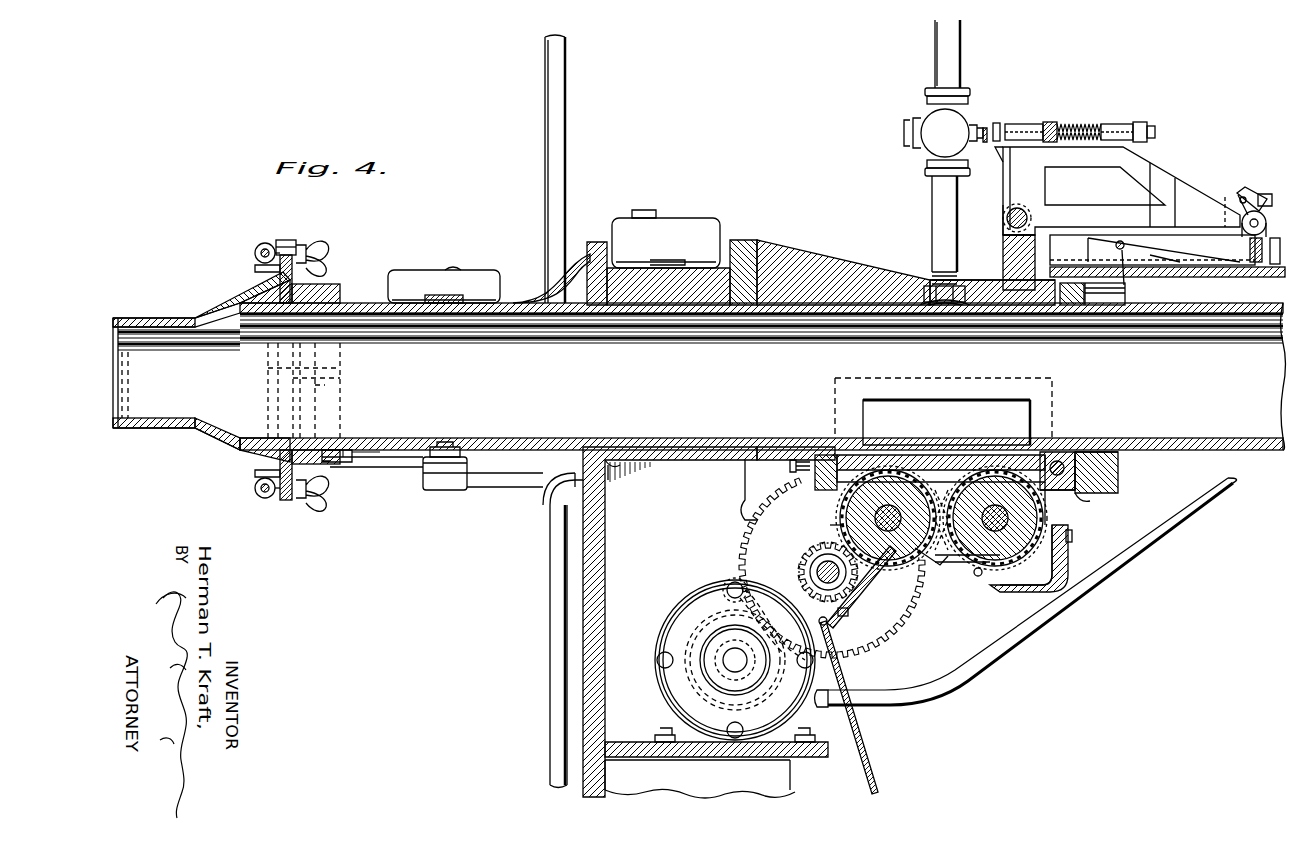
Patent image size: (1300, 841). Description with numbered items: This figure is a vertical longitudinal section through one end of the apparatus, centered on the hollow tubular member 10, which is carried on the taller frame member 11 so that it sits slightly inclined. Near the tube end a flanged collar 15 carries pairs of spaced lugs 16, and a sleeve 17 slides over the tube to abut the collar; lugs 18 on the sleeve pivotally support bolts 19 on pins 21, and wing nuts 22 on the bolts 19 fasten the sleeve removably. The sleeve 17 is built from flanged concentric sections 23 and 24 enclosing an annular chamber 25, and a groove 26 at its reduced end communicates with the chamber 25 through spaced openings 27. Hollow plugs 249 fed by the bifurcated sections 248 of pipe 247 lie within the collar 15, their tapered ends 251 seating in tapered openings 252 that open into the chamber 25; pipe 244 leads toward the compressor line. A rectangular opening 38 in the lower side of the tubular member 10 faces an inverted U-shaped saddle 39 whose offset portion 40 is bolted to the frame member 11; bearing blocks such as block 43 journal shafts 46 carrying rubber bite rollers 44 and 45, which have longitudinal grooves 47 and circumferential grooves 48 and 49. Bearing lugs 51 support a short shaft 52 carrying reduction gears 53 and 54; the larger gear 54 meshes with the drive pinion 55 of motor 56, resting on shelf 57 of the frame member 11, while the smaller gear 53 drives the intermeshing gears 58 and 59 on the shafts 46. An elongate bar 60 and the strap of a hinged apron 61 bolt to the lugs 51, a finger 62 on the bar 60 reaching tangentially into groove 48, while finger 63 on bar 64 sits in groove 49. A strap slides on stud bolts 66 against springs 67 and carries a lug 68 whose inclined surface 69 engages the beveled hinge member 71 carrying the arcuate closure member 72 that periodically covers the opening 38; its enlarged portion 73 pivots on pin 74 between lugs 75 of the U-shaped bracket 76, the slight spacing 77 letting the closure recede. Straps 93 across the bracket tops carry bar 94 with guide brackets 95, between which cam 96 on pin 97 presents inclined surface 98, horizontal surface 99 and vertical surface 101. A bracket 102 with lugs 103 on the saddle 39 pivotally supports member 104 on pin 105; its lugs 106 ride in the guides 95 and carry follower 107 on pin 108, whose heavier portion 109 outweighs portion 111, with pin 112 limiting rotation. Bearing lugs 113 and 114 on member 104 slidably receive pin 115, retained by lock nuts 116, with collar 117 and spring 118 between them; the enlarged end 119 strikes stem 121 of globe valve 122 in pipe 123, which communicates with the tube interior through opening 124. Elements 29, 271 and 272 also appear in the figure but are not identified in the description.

The tubular member 10 is at (543, 438).
The frame member 11 is at (743, 242).
The flanged collar 15 is at (330, 292).
The lugs 16 is at (292, 243).
The sleeve 17 is at (215, 298).
The lugs 18 is at (258, 265).
The bolts 19 is at (284, 256).
The pins 21 is at (265, 243).
The wing nuts 22 is at (318, 245).
The concentric section 23 is at (205, 430).
The concentric section 24 is at (168, 318).
The annular chamber 25 is at (262, 293).
The groove 26 is at (122, 360).
The openings 27 is at (124, 410).
The drain pipe 29 is at (550, 617).
The rectangular opening 38 is at (975, 400).
The saddle 39 is at (868, 263).
The offset portion 40 is at (790, 242).
The bearing block 43 is at (958, 562).
The bite roller 44 is at (842, 526).
The bite roller 45 is at (1050, 509).
The shafts 46 is at (950, 490).
The longitudinal grooves 47 is at (905, 470).
The circumferential groove 48 is at (843, 510).
The circumferential groove 49 is at (985, 470).
The bearing lugs 51 is at (806, 550).
The short shaft 52 is at (810, 573).
The reduction gear 53 is at (803, 560).
The reduction gear 54 is at (735, 580).
The drive pinion 55 is at (720, 632).
The motor 56 is at (658, 632).
The shelf 57 is at (810, 757).
The gear 58 is at (936, 562).
The gear 59 is at (980, 575).
The elongate bar 60 is at (848, 616).
The hinged apron 61 is at (872, 767).
The finger 62 is at (868, 586).
The finger 63 is at (1022, 592).
The elongate bar 64 is at (1072, 540).
The stud bolts 66 is at (790, 458).
The springs 67 is at (805, 478).
The lug 68 is at (828, 457).
The inclined upper surface 69 is at (870, 455).
The hinge member 71 is at (1070, 458).
The closure member 72 is at (1010, 452).
The enlarged portion 73 is at (1090, 450).
The pin 74 is at (1058, 460).
The lugs 75 is at (1100, 452).
The U-shape bracket 76 is at (1118, 470).
The spacing 77 is at (1090, 496).
The straps 93 is at (1085, 288).
The elongate bar 94 is at (1205, 278).
The guide brackets 95 is at (1275, 240).
The cam 96 is at (1150, 276).
The pin 97 is at (1130, 280).
The inclined surface 98 is at (1155, 256).
The horizontal surface 99 is at (1120, 240).
The vertical surface 101 is at (1088, 248).
The bracket 102 is at (1003, 252).
The lugs 103 is at (1003, 228).
The member 104 is at (1165, 180).
The pin 105 is at (1018, 208).
The lugs 106 is at (1267, 223).
The follower 107 is at (1270, 205).
The pin 108 is at (1238, 200).
The heavier portion 109 is at (1250, 248).
The lighter portion 111 is at (1258, 193).
The pin 112 is at (1243, 196).
The bearing lug 113 is at (1026, 124).
The bearing lug 114 is at (1118, 124).
The pin 115 is at (1155, 132).
The lock nuts 116 is at (1152, 118).
The collar 117 is at (1056, 118).
The spring 118 is at (1088, 118).
The enlarged portion 119 is at (996, 122).
The stem 121 is at (985, 127).
The globe valve 122 is at (928, 118).
The pipe 123 is at (934, 49).
The opening 124 is at (947, 306).
The pipe 244 is at (566, 118).
The pipe 247 is at (403, 470).
The bifurcated sections 248 is at (345, 462).
The hollow plugs 249 is at (340, 372).
The tapered ends 251 is at (278, 366).
The tapered openings 252 is at (270, 360).
The box 271 is at (638, 222).
The box 272 is at (420, 272).